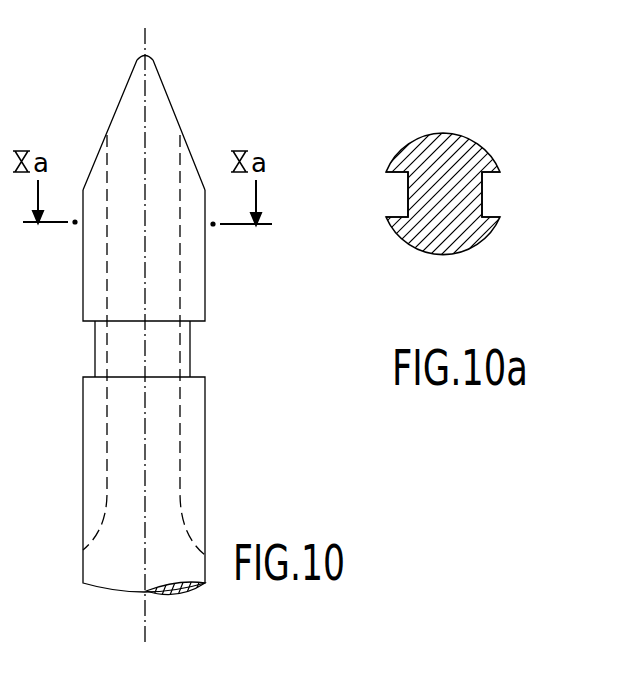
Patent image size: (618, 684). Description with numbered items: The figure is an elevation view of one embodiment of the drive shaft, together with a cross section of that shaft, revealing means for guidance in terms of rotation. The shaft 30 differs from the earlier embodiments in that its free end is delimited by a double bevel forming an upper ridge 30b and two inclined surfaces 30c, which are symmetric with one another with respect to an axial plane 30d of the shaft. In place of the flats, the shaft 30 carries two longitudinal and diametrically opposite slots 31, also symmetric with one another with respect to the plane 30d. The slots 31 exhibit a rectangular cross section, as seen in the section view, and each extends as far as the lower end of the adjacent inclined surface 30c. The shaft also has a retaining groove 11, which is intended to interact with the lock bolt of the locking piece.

In FIG. 10, the shaft 30 is at (205, 282).
In FIG. 10a, the shaft 30 is at (444, 131).
In FIG. 10, the upper ridge 30b is at (145, 53).
In FIG. 10, the inclined surfaces 30c is at (172, 108).
In FIG. 10, the axial plane 30d is at (145, 612).
In FIG. 10, the slots 31 is at (97, 460).
In FIG. 10a, the slots 31 is at (407, 198).
In FIG. 10, the retaining groove 11 is at (190, 350).